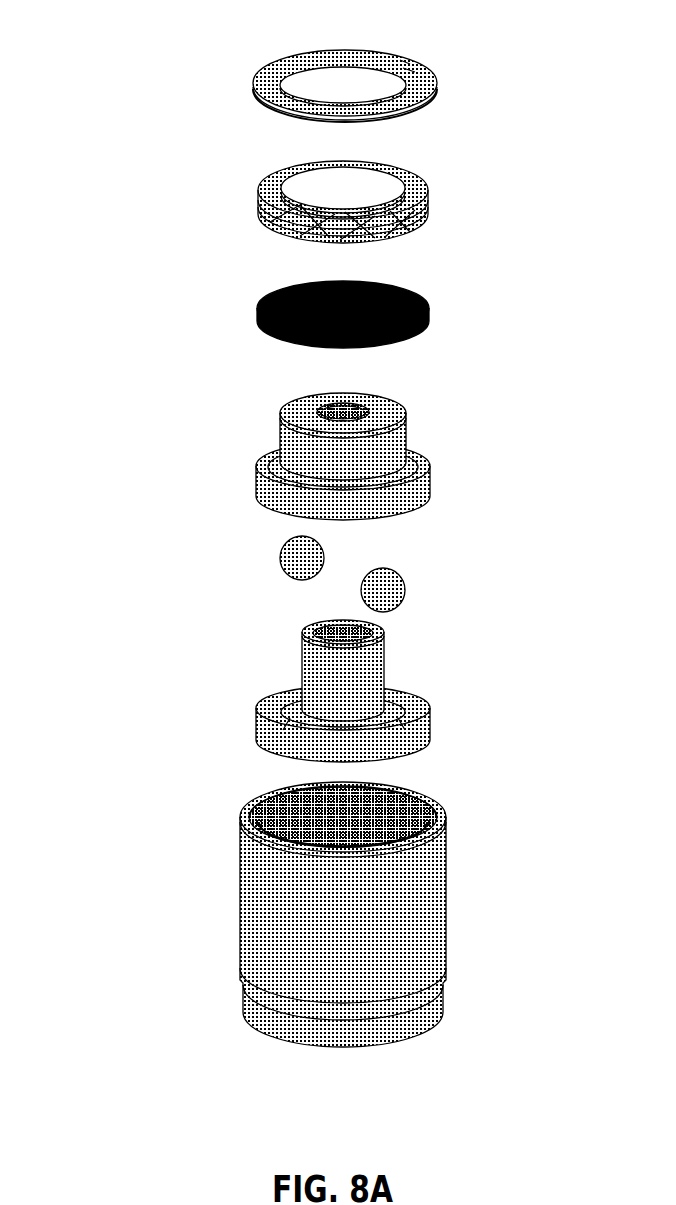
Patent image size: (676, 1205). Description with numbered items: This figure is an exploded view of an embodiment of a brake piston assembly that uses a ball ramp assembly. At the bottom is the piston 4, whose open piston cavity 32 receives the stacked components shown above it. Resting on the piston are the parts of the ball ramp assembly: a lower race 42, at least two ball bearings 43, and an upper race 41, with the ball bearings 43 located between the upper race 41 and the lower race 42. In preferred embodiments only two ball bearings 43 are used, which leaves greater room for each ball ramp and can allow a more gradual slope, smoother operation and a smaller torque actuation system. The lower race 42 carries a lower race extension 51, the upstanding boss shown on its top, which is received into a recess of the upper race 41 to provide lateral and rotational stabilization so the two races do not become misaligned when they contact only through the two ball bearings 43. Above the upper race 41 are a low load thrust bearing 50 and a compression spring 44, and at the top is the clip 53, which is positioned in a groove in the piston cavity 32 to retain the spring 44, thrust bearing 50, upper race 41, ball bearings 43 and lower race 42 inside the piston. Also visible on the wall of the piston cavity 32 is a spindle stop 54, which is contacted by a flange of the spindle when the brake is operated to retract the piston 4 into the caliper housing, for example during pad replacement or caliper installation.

The clip 53 is at (433, 85).
The compression spring 44 is at (423, 183).
The low load thrust bearing 50 is at (428, 304).
The upper race 41 is at (447, 425).
The ball bearings 43 is at (401, 584).
The lower race extension 51 is at (333, 672).
The lower race 42 is at (237, 675).
The piston cavity 32 is at (383, 830).
The spindle stop 54 is at (283, 813).
The piston 4 is at (330, 886).